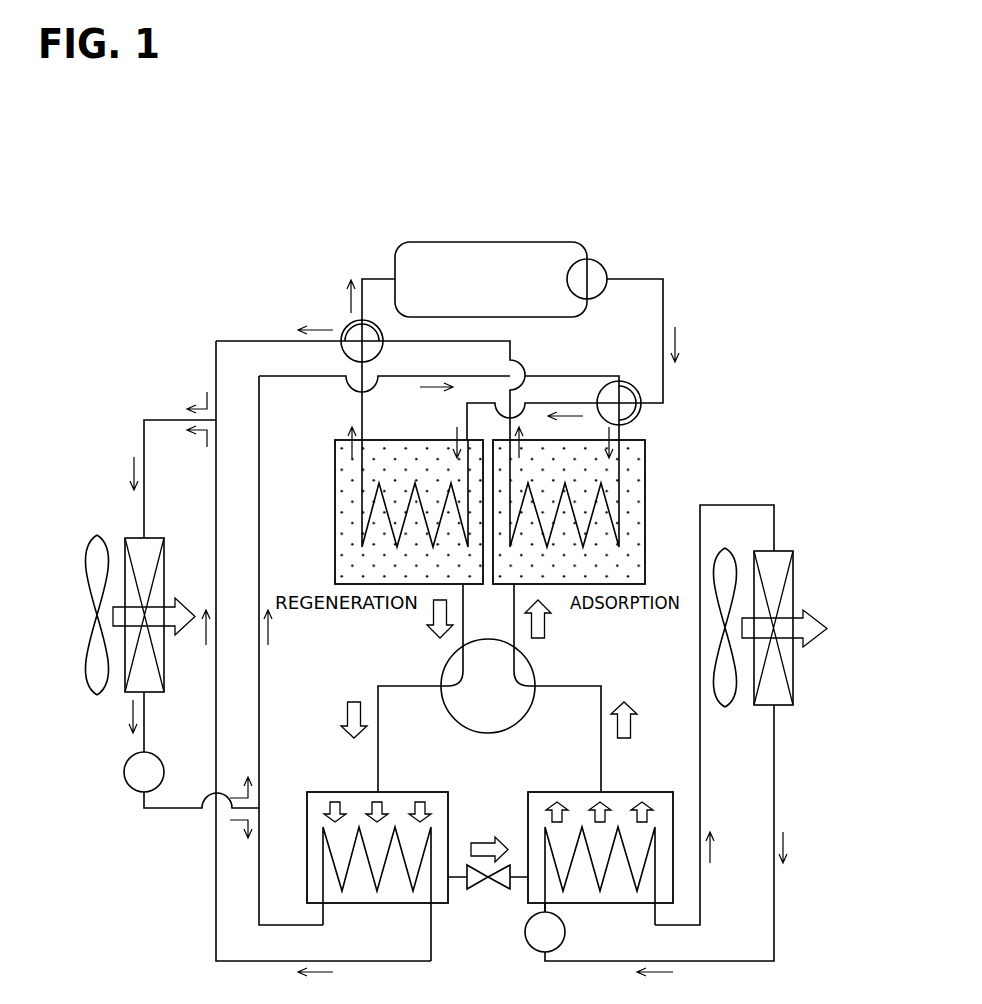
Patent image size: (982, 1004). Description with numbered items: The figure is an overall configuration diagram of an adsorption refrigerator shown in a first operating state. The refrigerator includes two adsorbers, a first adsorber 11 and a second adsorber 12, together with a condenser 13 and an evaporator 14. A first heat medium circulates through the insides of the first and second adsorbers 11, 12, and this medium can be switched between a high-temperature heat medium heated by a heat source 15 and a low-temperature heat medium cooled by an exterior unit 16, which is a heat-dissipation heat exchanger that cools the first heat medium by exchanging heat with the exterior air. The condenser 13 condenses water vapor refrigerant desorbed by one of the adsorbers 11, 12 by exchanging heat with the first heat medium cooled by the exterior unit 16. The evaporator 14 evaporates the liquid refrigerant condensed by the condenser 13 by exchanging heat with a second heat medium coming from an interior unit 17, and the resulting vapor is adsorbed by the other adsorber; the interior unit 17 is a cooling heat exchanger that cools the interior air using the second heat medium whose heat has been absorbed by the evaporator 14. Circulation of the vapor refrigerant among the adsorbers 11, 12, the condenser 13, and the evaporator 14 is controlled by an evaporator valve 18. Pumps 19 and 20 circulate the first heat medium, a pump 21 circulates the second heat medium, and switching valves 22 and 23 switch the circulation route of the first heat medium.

The first adsorber 11 is at (335, 476).
The second adsorber 12 is at (645, 476).
The condenser 13 is at (315, 790).
The evaporator 14 is at (662, 790).
The heat source 15 is at (492, 242).
The exterior unit 16 is at (125, 556).
The interior unit 17 is at (793, 587).
The evaporator valve 18 is at (488, 733).
The pump 19 is at (588, 259).
The pump 20 is at (123, 772).
The pump 21 is at (524, 935).
The switching valve 22 is at (632, 421).
The switching valve 23 is at (344, 327).